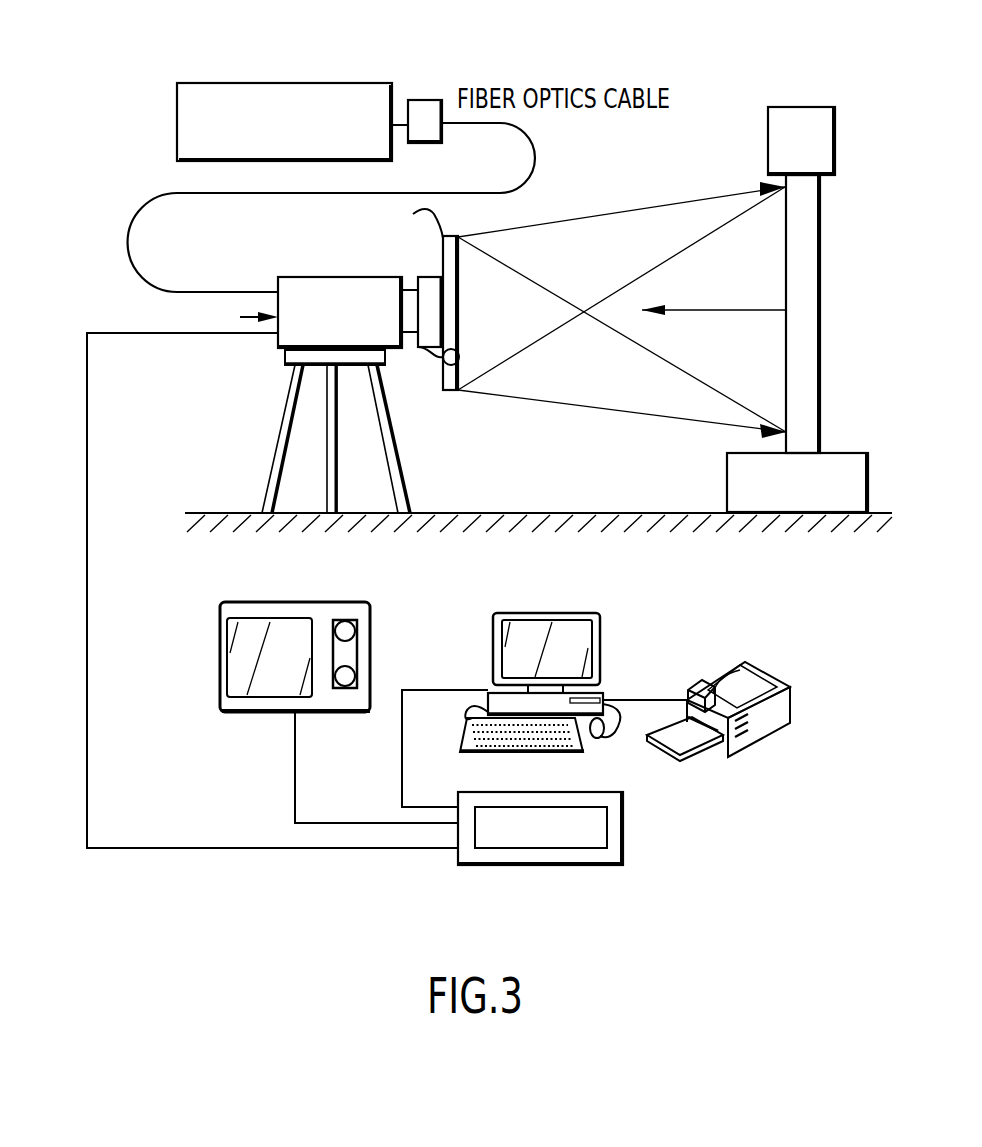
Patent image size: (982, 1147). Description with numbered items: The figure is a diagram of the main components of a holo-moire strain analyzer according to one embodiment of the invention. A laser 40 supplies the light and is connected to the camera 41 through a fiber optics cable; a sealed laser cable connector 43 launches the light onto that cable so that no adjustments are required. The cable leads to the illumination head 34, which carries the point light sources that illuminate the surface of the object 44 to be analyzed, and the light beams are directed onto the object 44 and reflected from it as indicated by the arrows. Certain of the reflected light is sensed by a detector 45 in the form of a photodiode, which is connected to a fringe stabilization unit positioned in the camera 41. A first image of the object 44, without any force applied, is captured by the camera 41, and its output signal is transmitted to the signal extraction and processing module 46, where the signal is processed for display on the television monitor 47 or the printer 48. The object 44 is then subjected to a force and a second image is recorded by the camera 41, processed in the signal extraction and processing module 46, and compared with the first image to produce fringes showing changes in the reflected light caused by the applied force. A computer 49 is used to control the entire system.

The laser 40 is at (348, 100).
The laser cable connector 43 is at (424, 100).
The illumination head 34 is at (443, 255).
The camera 41 is at (297, 337).
The object 44 is at (820, 280).
The detector 45 is at (453, 391).
The television monitor 47 is at (308, 602).
The computer 49 is at (600, 692).
The printer 48 is at (760, 665).
The signal extraction and processing module 46 is at (488, 840).